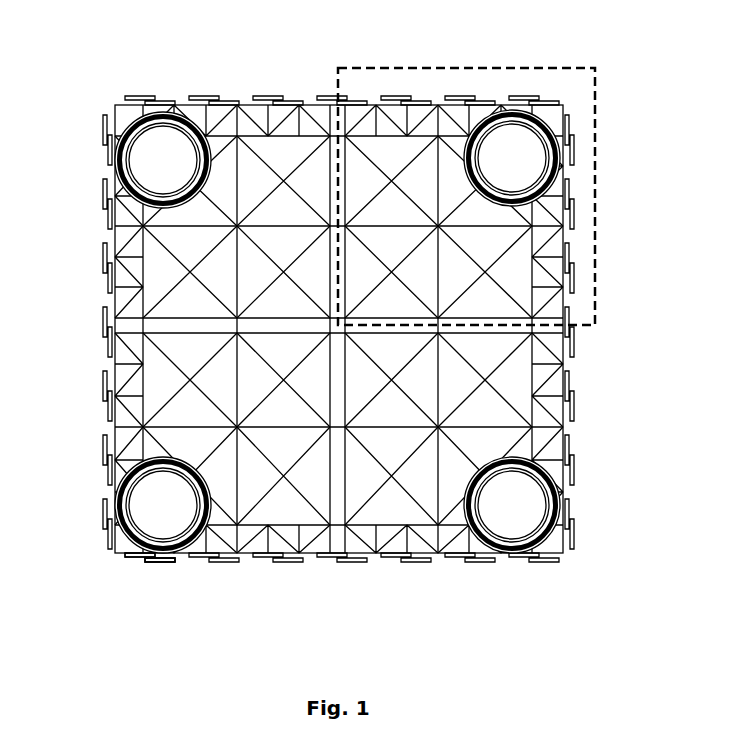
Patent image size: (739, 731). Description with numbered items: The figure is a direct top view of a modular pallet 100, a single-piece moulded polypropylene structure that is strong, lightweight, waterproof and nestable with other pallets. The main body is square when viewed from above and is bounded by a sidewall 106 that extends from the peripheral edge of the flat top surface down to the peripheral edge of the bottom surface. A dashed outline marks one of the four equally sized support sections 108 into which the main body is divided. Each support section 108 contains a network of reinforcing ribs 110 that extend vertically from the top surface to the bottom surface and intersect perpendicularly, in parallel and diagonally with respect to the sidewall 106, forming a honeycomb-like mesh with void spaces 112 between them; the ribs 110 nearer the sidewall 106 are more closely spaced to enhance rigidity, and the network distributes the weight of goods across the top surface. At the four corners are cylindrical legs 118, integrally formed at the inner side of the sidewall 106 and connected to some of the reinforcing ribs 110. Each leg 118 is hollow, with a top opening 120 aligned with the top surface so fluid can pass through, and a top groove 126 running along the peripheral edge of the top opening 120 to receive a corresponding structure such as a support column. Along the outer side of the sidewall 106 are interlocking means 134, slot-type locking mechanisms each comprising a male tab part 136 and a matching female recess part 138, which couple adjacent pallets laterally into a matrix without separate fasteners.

The modular pallet 100 is at (107, 48).
The sidewall 106 is at (303, 103).
The support section 108 is at (486, 66).
The reinforcing ribs 110 is at (168, 402).
The void spaces 112 is at (136, 302).
The legs 118 is at (342, 319).
The top opening 120 is at (150, 168).
The top groove 126 is at (561, 158).
The interlocking means 134 is at (159, 605).
The male tab part 136 is at (170, 565).
The female recess part 138 is at (142, 564).